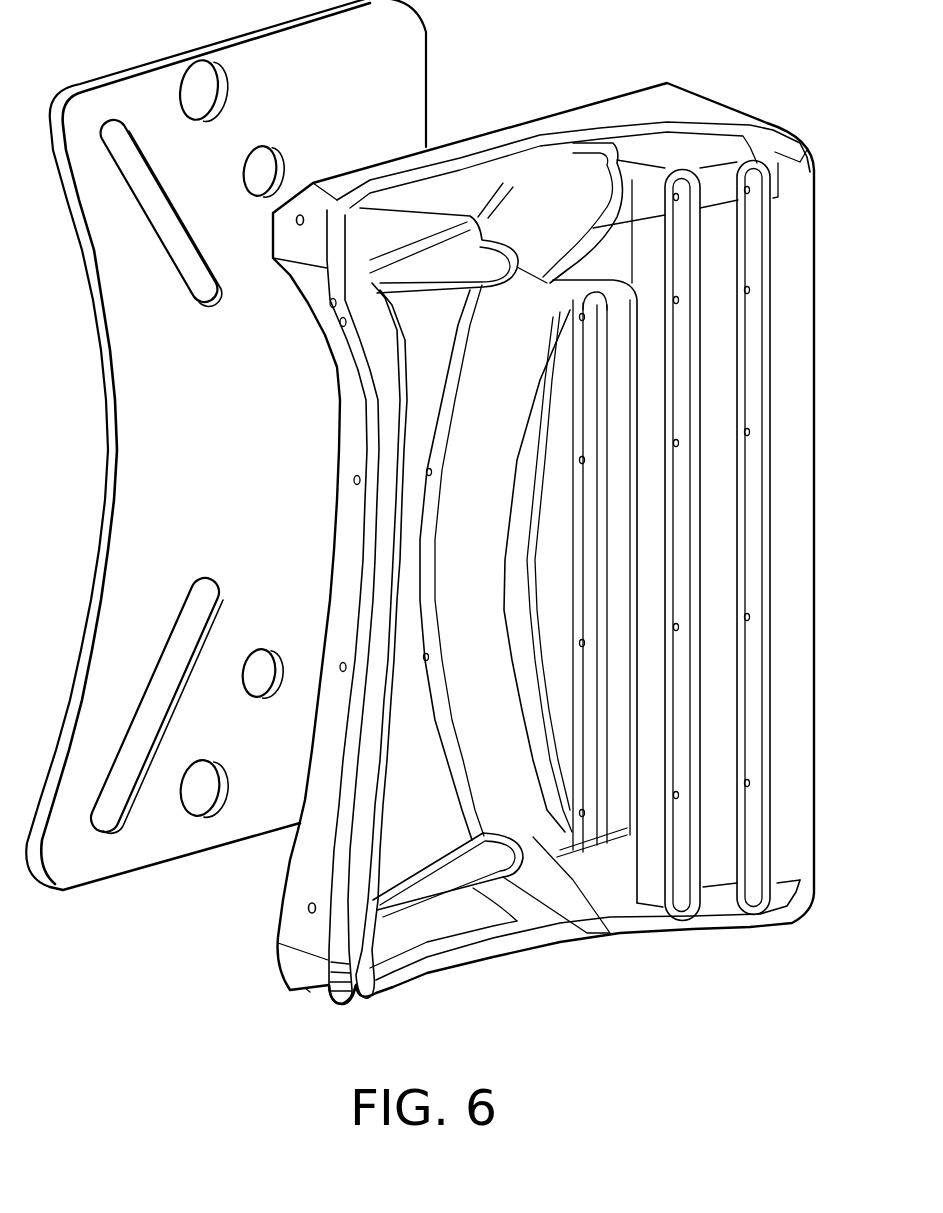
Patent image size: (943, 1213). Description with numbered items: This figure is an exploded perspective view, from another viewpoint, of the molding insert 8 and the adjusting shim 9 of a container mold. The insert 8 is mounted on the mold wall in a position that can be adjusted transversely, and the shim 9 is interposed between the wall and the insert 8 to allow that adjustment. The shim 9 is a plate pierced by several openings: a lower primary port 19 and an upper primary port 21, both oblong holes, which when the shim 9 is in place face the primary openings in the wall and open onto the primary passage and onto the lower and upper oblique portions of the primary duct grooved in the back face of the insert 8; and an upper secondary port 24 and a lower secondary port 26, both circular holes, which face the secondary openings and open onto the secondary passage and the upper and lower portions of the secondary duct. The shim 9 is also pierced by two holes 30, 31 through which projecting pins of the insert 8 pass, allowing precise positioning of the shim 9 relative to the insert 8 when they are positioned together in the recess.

The molding insert 8 is at (814, 508).
The adjusting shim 9 is at (253, 445).
The lower primary port 19 is at (145, 705).
The upper primary port 21 is at (162, 233).
The upper secondary port 24 is at (264, 162).
The lower secondary port 26 is at (263, 663).
The hole 30 is at (217, 80).
The hole 31 is at (207, 783).